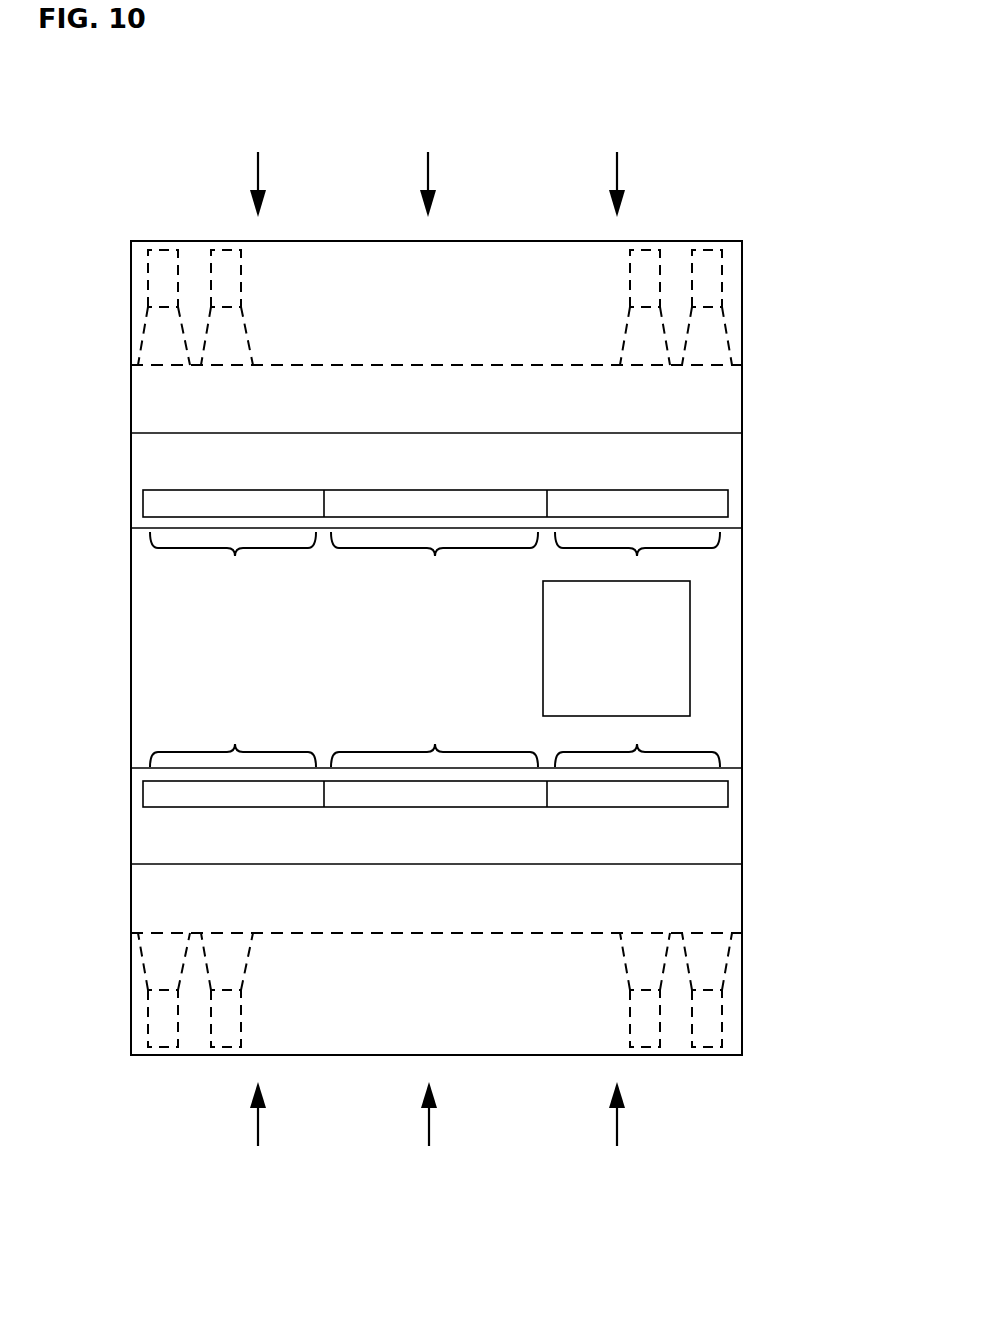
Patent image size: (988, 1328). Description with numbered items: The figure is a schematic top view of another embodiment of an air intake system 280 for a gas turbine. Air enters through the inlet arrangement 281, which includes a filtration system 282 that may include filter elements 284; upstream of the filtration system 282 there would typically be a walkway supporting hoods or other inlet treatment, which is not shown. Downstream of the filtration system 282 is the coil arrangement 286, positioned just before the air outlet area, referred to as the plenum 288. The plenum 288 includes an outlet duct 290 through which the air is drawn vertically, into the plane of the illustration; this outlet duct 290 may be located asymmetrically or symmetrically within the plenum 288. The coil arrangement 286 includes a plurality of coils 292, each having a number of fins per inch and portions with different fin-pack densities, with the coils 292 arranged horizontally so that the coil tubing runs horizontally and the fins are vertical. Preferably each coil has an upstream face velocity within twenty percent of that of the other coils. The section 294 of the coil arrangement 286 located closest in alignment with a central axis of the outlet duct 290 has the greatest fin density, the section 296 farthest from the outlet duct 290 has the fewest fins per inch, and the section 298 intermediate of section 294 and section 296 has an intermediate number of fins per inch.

The air intake system 280 is at (305, 145).
The inlet arrangement 281 is at (146, 218).
The filtration system 282 is at (128, 318).
The filter elements 284 is at (241, 275).
The coil arrangement 286 is at (122, 509).
The plenum 288 is at (356, 658).
The outlet duct 290 is at (710, 608).
The coils 292 is at (216, 490).
The section 294 is at (637, 649).
The section 296 is at (233, 649).
The section 298 is at (434, 649).